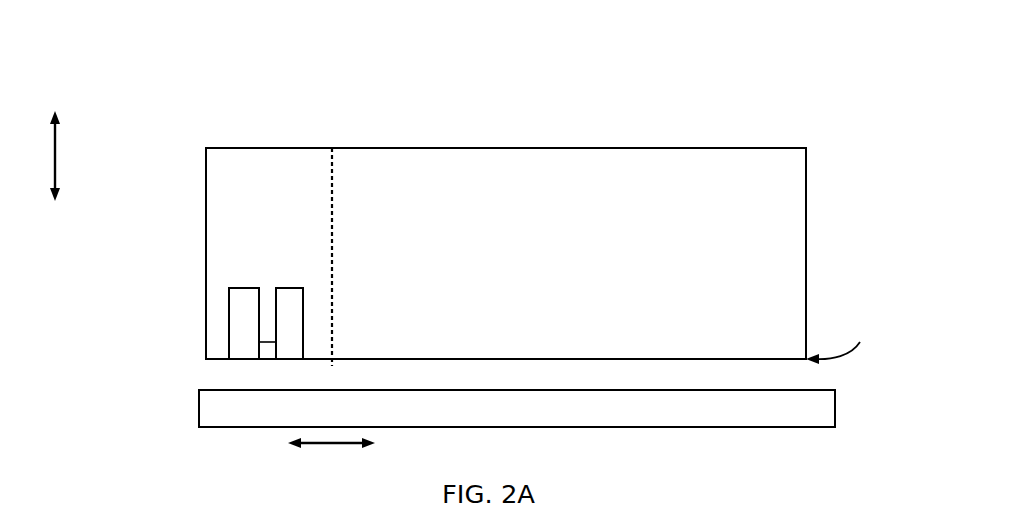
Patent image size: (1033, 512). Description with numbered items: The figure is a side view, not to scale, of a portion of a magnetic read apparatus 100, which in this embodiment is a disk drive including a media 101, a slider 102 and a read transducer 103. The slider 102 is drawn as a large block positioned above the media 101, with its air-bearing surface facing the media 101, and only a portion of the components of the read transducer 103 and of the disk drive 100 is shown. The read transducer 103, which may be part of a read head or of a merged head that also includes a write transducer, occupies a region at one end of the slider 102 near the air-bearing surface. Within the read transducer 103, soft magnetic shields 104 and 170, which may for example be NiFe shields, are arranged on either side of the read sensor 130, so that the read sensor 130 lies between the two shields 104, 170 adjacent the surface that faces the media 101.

The magnetic read apparatus 100 is at (512, 52).
The media 101 is at (199, 410).
The slider 102 is at (806, 257).
The read transducer 103 is at (356, 247).
The soft magnetic shield 104 is at (292, 288).
The read sensor 130 is at (257, 358).
The soft magnetic shield 170 is at (230, 288).